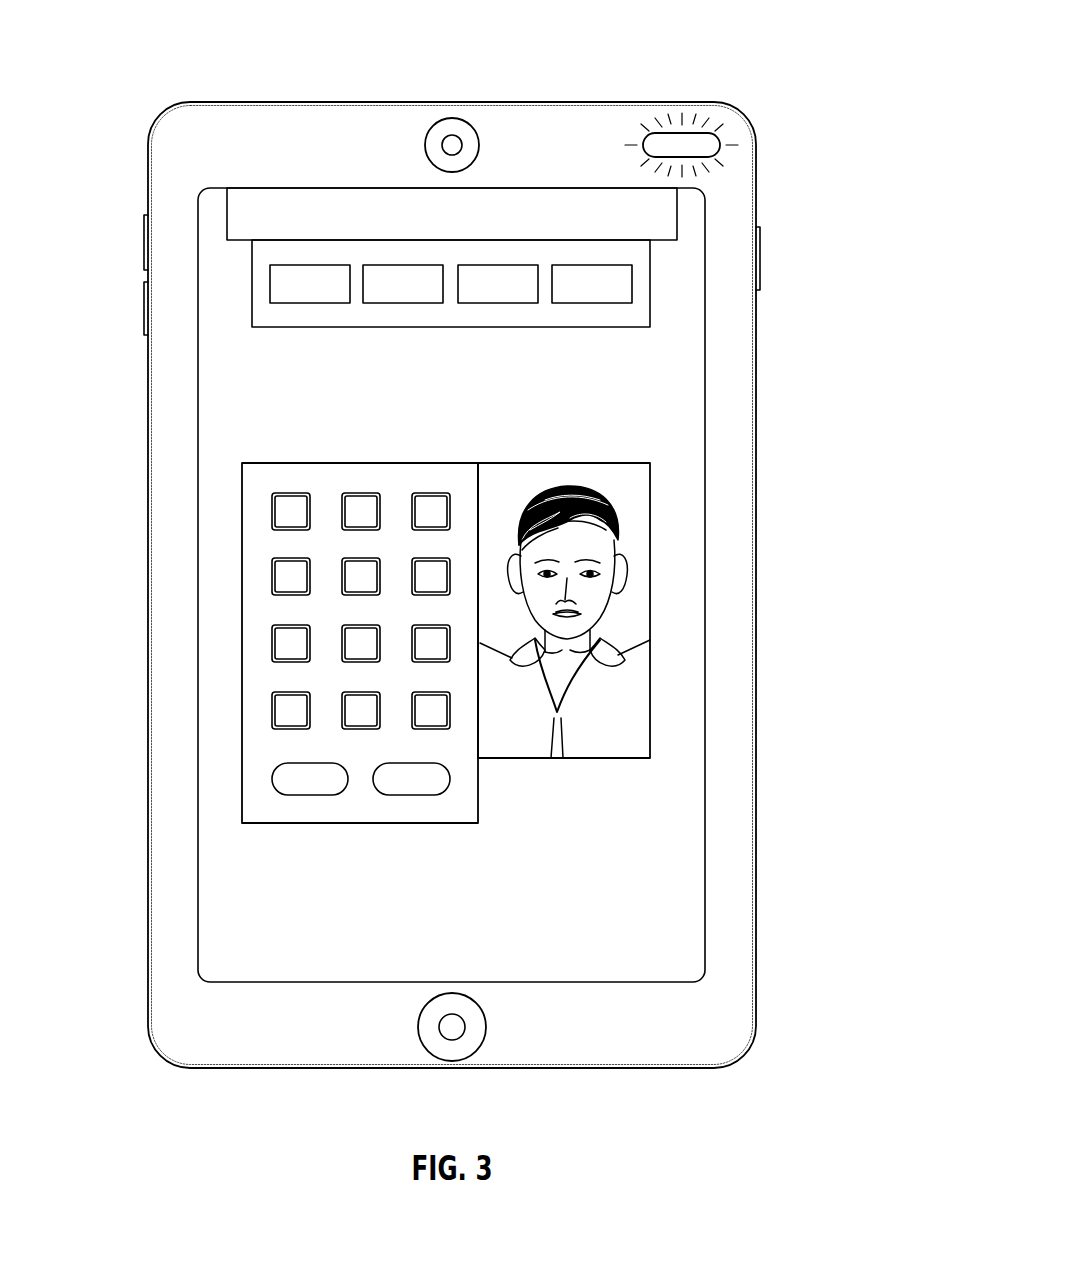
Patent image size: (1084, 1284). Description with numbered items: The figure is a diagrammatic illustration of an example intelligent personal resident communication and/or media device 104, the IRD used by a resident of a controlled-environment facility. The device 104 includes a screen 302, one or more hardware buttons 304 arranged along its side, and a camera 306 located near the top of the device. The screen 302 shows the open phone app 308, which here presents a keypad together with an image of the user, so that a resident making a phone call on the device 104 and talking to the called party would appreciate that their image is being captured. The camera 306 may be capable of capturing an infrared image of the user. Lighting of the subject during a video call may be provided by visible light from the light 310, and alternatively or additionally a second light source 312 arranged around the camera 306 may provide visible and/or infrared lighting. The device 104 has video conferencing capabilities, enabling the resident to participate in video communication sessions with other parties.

The intelligent personal resident communication and/or media device 104 is at (710, 30).
The screen 302 is at (312, 953).
The hardware buttons 304 is at (134, 272).
The camera 306 is at (447, 139).
The phone app 308 is at (557, 775).
The light 310 is at (650, 136).
The second light source 312 is at (452, 118).